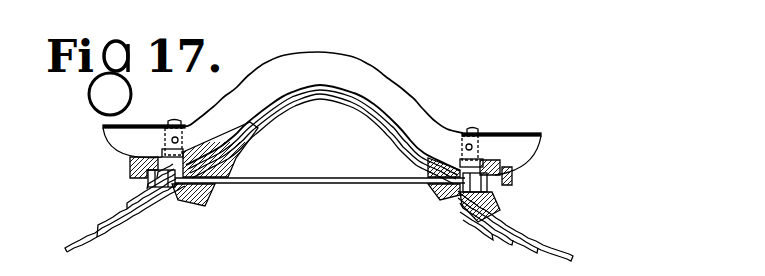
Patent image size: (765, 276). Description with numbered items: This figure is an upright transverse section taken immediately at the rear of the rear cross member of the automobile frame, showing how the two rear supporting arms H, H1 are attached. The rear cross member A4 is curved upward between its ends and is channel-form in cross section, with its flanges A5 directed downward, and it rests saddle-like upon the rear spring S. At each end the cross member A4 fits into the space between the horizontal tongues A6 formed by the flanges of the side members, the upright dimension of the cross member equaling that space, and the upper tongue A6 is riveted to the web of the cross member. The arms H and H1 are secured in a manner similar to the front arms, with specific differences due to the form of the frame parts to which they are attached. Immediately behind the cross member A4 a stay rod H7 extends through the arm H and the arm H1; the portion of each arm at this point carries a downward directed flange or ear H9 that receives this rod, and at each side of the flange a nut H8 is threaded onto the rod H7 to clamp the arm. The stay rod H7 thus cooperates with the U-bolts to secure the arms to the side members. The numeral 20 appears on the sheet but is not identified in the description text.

The rear cross member A4 is at (322, 90).
The flanges A5 is at (413, 108).
The horizontal tongues A6 is at (183, 124).
The supporting arm H is at (130, 176).
The supporting arm H1 is at (513, 174).
The stay rod H7 is at (393, 186).
The nut H8 is at (157, 187).
The downward directed flange or ear H9 is at (167, 184).
The rear spring S is at (168, 205).
The sheet numeral 20 is at (266, 259).